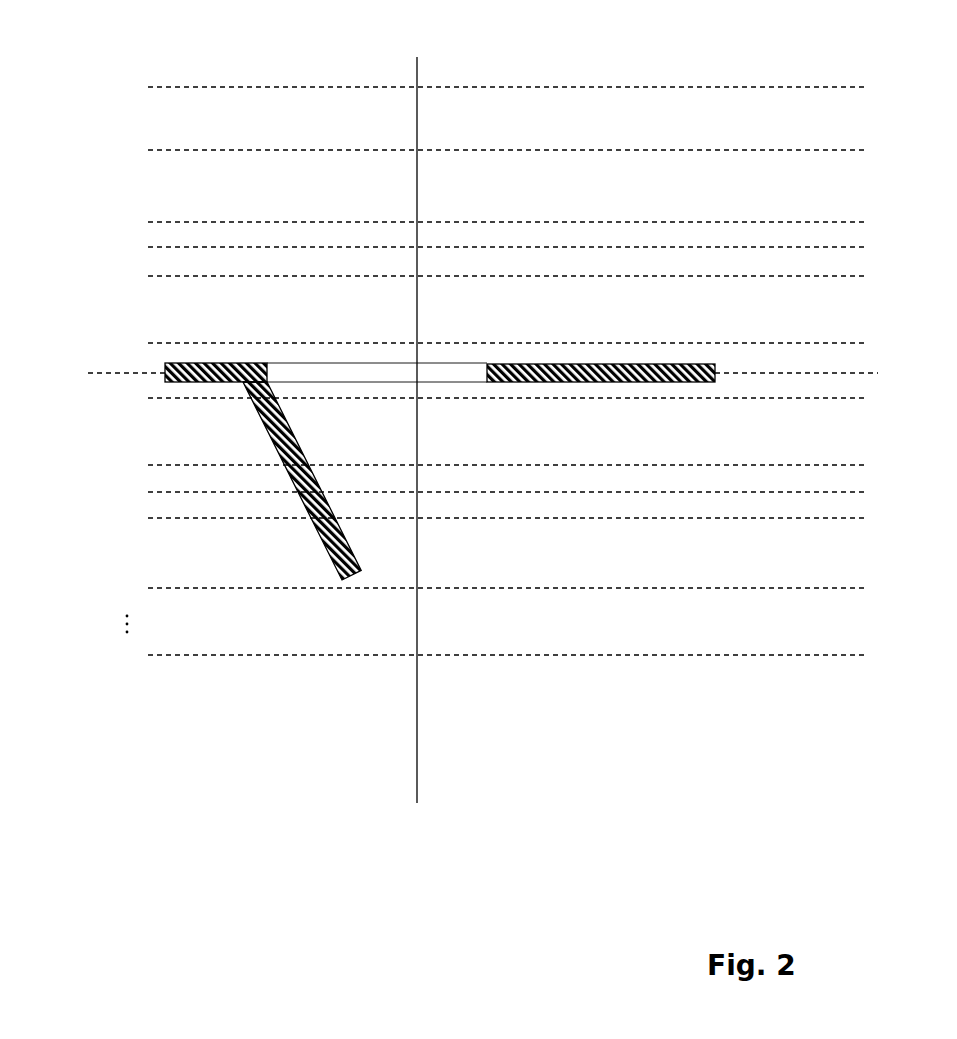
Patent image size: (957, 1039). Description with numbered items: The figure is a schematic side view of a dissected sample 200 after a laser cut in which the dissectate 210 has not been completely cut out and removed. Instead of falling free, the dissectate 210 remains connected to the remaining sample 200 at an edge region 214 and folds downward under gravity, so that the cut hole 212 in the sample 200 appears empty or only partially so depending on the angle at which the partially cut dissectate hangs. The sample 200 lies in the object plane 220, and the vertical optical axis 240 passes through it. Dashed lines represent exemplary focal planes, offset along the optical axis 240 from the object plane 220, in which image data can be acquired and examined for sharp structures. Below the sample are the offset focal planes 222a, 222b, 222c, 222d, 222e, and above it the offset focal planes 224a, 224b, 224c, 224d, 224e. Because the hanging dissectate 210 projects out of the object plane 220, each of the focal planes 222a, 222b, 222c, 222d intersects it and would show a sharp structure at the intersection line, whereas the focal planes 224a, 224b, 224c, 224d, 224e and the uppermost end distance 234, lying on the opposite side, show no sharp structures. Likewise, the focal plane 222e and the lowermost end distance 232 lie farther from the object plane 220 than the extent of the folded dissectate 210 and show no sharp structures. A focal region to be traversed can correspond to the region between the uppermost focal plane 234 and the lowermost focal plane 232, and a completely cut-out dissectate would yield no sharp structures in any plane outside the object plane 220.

The sample 200 is at (672, 362).
The incompletely separated dissectate 210 is at (313, 518).
The cut hole 212 is at (325, 366).
The edge region 214 is at (241, 397).
The object plane 220 is at (462, 373).
The offset focal plane below the sample 222a is at (480, 398).
The offset focal plane below the sample 222b is at (480, 465).
The offset focal plane below the sample 222c is at (480, 491).
The offset focal plane below the sample 222d is at (480, 517).
The offset focal plane below the sample 222e is at (480, 587).
The offset focal plane above the sample 224a is at (480, 342).
The offset focal plane above the sample 224b is at (480, 276).
The offset focal plane above the sample 224c is at (480, 246).
The offset focal plane above the sample 224d is at (480, 225).
The offset focal plane above the sample 224e is at (480, 150).
The end distance below the sample 232 is at (481, 655).
The end distance above the sample 234 is at (481, 86).
The optical axis 240 is at (412, 412).